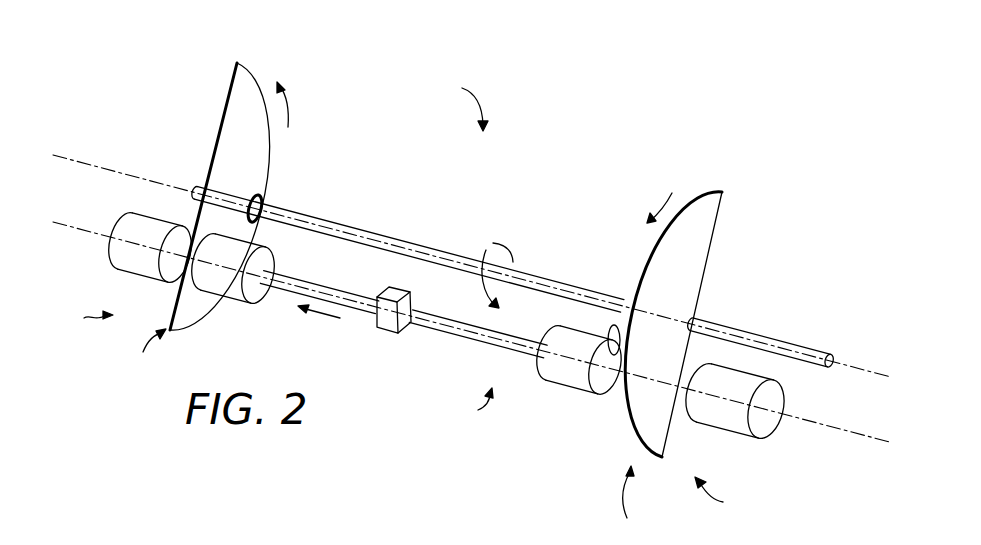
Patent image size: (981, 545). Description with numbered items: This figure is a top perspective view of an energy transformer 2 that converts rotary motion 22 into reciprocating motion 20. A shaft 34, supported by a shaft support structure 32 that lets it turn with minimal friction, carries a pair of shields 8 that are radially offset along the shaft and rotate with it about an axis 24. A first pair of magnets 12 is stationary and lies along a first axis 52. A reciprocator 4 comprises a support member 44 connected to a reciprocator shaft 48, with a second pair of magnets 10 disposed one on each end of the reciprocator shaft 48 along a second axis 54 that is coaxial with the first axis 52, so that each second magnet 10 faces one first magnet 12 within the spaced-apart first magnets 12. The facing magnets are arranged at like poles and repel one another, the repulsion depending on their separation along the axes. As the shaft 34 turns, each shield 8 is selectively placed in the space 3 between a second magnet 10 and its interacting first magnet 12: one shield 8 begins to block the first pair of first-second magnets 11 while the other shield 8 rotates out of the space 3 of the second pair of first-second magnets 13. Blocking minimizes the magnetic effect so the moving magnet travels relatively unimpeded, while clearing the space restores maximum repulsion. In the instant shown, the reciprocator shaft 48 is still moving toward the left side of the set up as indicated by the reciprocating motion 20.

The energy transformer 2 is at (464, 103).
The space 3 is at (389, 430).
The reciprocator 4 is at (477, 407).
The shield 8 is at (268, 160).
The second pair of magnets 10 is at (222, 294).
The first pair of first-second magnets 11 is at (84, 319).
The first pair of magnets 12 is at (140, 272).
The second pair of first-second magnets 13 is at (725, 495).
The reciprocating motion 20 is at (322, 316).
The rotary motion 22 is at (493, 243).
The axis 24 is at (119, 172).
The shaft support structure 32 is at (266, 197).
The shaft 34 is at (402, 242).
The support member 44 is at (406, 326).
The reciprocator shaft 48 is at (325, 268).
The first axis 52 is at (102, 214).
The second axis 54 is at (609, 345).